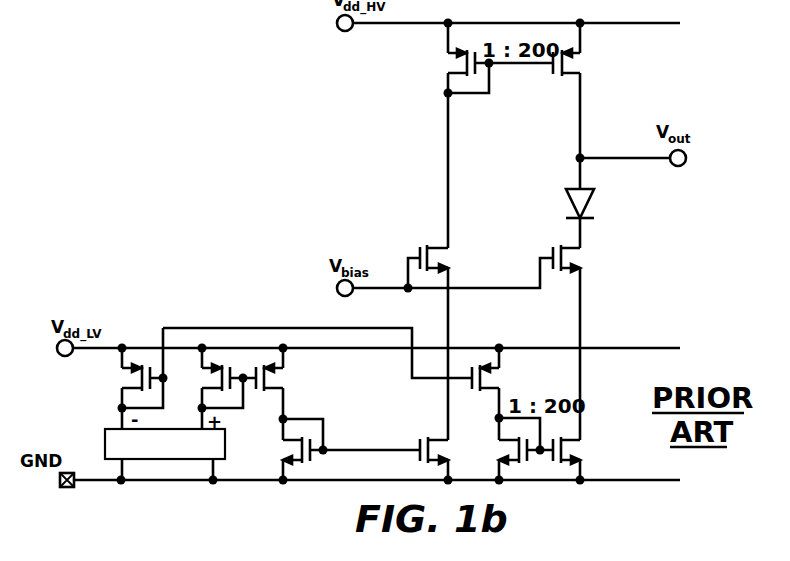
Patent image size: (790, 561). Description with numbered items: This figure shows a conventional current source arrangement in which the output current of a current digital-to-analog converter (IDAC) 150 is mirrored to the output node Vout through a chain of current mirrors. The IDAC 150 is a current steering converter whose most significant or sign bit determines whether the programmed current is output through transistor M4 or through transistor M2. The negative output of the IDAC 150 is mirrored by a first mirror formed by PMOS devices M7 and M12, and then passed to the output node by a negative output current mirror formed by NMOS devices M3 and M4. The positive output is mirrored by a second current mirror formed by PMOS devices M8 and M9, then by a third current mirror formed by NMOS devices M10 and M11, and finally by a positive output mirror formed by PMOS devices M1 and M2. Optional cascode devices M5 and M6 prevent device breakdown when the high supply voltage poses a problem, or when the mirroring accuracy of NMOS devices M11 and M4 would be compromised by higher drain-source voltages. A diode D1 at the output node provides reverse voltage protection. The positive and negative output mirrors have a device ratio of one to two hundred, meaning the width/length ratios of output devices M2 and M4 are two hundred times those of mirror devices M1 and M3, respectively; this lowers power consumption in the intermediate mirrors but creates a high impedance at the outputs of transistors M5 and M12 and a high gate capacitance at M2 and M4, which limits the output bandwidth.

The current digital-to-analog converter (IDAC) 150 is at (105, 430).
The PMOS device M1 is at (447, 62).
The PMOS device M2 is at (579, 62).
The NMOS device M3 is at (504, 450).
The NMOS device M4 is at (577, 450).
The cascode device M5 is at (449, 258).
The cascode device M6 is at (579, 258).
The PMOS device M7 is at (130, 377).
The PMOS device M8 is at (220, 377).
The PMOS device M9 is at (282, 377).
The NMOS device M10 is at (281, 450).
The NMOS device M11 is at (446, 450).
The PMOS device M12 is at (500, 377).
The diode D1 is at (593, 203).